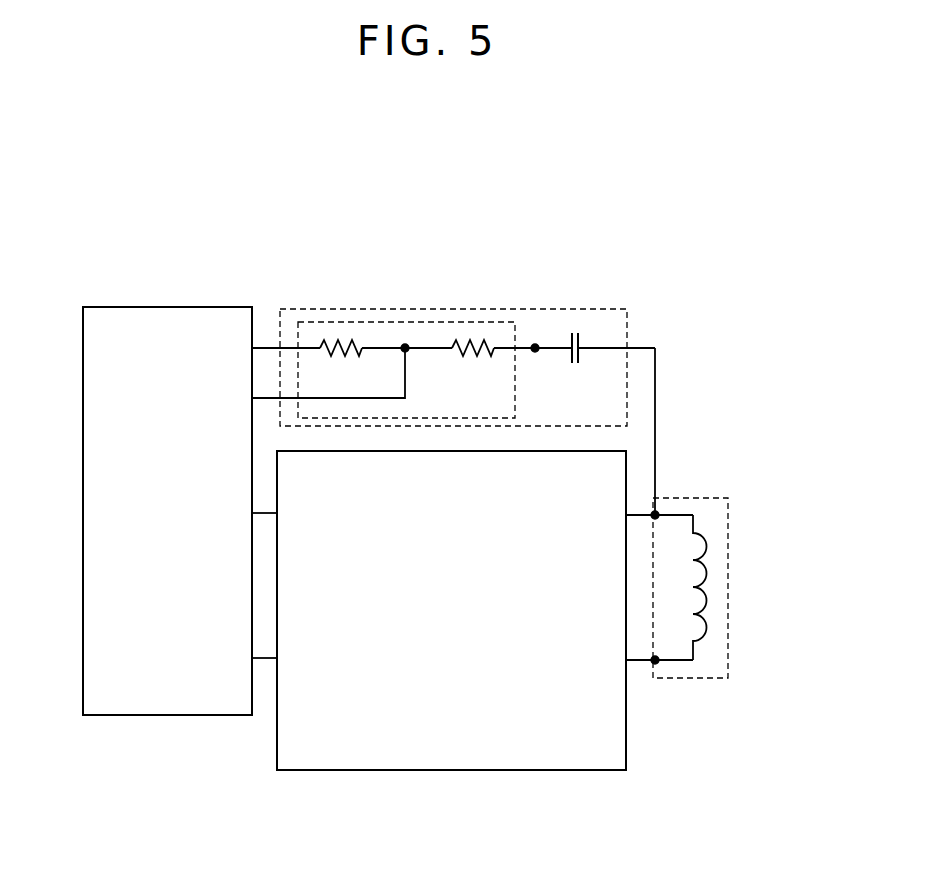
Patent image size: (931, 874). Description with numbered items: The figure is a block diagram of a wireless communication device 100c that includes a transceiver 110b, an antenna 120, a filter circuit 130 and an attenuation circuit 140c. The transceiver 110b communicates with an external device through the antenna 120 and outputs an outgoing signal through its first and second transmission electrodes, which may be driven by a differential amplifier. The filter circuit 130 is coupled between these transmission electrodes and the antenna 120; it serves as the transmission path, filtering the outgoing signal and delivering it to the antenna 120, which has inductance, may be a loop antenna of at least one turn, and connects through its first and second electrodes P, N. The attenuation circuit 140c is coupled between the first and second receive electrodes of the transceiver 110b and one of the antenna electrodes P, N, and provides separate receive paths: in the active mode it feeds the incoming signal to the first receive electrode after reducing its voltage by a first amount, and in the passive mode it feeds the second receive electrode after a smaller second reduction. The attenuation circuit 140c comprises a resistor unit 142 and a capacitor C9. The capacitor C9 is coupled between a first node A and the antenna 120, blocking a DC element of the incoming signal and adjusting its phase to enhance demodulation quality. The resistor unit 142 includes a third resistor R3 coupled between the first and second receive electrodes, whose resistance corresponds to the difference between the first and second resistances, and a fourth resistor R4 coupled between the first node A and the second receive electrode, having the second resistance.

The wireless communication device 100c is at (372, 205).
The transceiver 110b is at (167, 307).
The antenna 120 is at (728, 585).
The filter circuit 130 is at (427, 771).
The attenuation circuit 140c is at (556, 309).
The resistor unit 142 is at (370, 322).
The third resistor R3 is at (341, 364).
The fourth resistor R4 is at (473, 364).
The capacitor C9 is at (575, 360).
The first node A is at (535, 352).
The first electrode P is at (657, 519).
The second electrode N is at (657, 664).